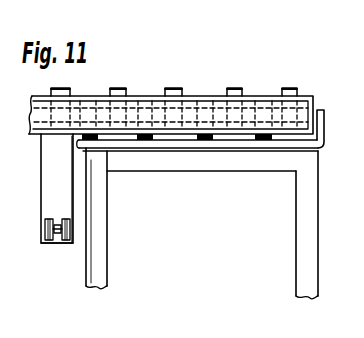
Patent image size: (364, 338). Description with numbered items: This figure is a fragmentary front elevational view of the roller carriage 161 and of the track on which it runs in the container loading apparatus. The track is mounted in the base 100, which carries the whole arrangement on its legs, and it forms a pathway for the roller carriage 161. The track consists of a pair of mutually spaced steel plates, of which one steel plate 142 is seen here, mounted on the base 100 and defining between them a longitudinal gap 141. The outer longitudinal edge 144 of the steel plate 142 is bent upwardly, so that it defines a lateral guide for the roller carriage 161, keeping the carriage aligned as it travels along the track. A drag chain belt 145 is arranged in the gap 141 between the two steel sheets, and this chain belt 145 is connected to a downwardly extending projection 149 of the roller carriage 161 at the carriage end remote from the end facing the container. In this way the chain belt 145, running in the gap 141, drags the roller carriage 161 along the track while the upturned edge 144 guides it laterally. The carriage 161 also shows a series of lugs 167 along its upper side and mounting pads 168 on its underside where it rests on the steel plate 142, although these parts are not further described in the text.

The roller carriage 161 is at (201, 84).
The lugs 167 is at (165, 87).
The mounting pads 168 is at (192, 148).
The steel plate 142 is at (217, 148).
The outer longitudinal edge 144 is at (322, 109).
The base 100 is at (98, 265).
The downwardly extending projection 149 is at (50, 183).
The drag chain belt 145 is at (55, 243).
The longitudinal gap 141 is at (65, 250).